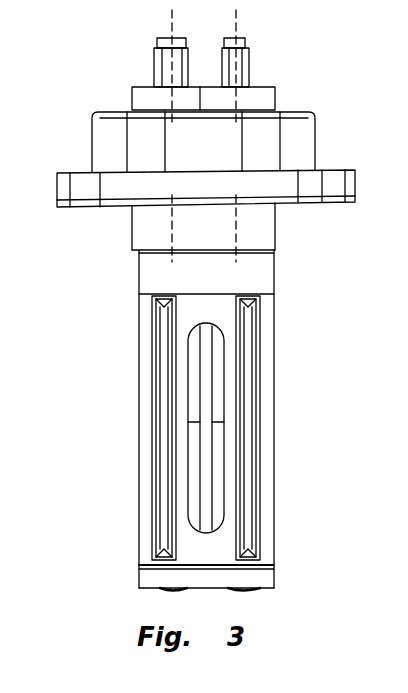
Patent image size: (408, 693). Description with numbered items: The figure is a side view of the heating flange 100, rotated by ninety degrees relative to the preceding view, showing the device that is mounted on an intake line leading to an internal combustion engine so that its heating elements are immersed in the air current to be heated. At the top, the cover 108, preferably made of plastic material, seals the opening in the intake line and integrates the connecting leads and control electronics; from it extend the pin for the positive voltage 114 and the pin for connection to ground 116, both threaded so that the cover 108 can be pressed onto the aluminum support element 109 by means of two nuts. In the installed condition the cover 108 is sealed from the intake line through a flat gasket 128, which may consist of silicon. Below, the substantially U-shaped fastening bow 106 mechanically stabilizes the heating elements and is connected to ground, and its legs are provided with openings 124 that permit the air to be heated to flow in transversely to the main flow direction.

The heating flange 100 is at (187, 300).
The fastening bow 106 is at (268, 445).
The cover 108 is at (98, 158).
The support element 109 is at (60, 192).
The pin for the positive voltage 114 is at (158, 63).
The pin for connection to ground 116 is at (253, 52).
The openings 124 is at (190, 392).
The flat gasket 128 is at (93, 203).